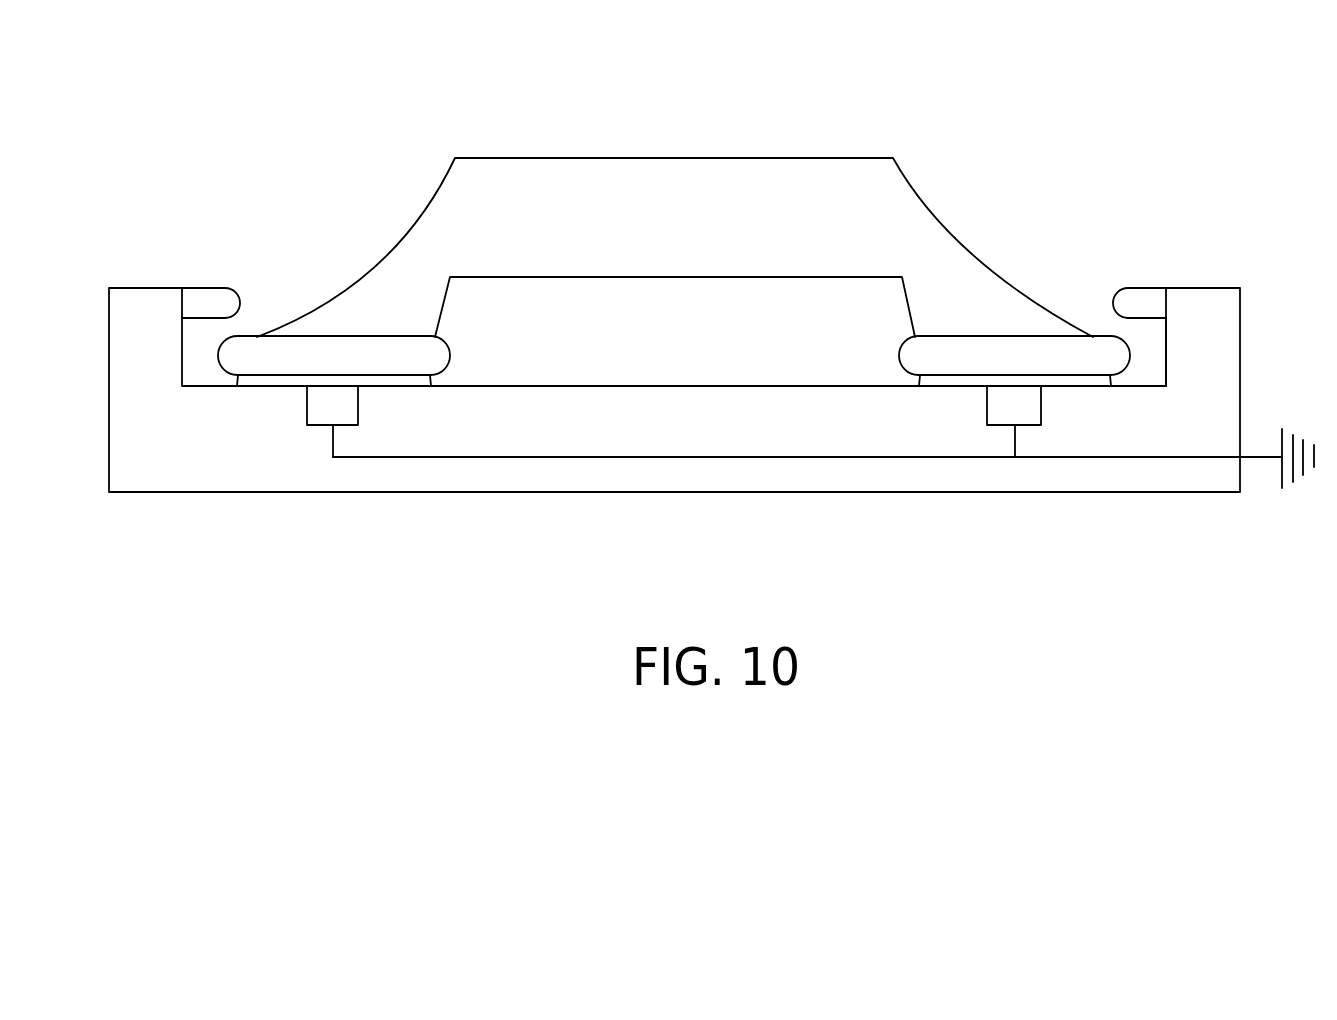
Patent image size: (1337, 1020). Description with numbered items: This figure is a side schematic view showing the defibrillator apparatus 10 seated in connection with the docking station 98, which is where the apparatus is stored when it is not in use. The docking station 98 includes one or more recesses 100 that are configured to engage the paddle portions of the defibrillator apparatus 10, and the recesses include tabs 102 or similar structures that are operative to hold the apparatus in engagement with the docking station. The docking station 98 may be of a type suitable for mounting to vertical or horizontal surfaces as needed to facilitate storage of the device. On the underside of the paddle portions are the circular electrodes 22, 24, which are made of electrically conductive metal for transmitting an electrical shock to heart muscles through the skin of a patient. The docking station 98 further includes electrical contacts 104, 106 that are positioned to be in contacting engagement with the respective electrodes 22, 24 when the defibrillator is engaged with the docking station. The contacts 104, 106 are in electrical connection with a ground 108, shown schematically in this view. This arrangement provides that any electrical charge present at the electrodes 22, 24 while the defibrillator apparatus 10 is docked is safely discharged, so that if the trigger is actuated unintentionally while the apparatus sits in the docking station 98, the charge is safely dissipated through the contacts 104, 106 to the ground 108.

The defibrillator apparatus 10 is at (893, 157).
The circular electrode 22 is at (272, 386).
The circular electrode 24 is at (1077, 386).
The docking station 98 is at (1240, 288).
The recess 100 is at (1143, 338).
The tab 102 is at (237, 307).
The electrical contact 104 is at (358, 425).
The electrical contact 106 is at (1041, 386).
The ground 108 is at (1314, 467).